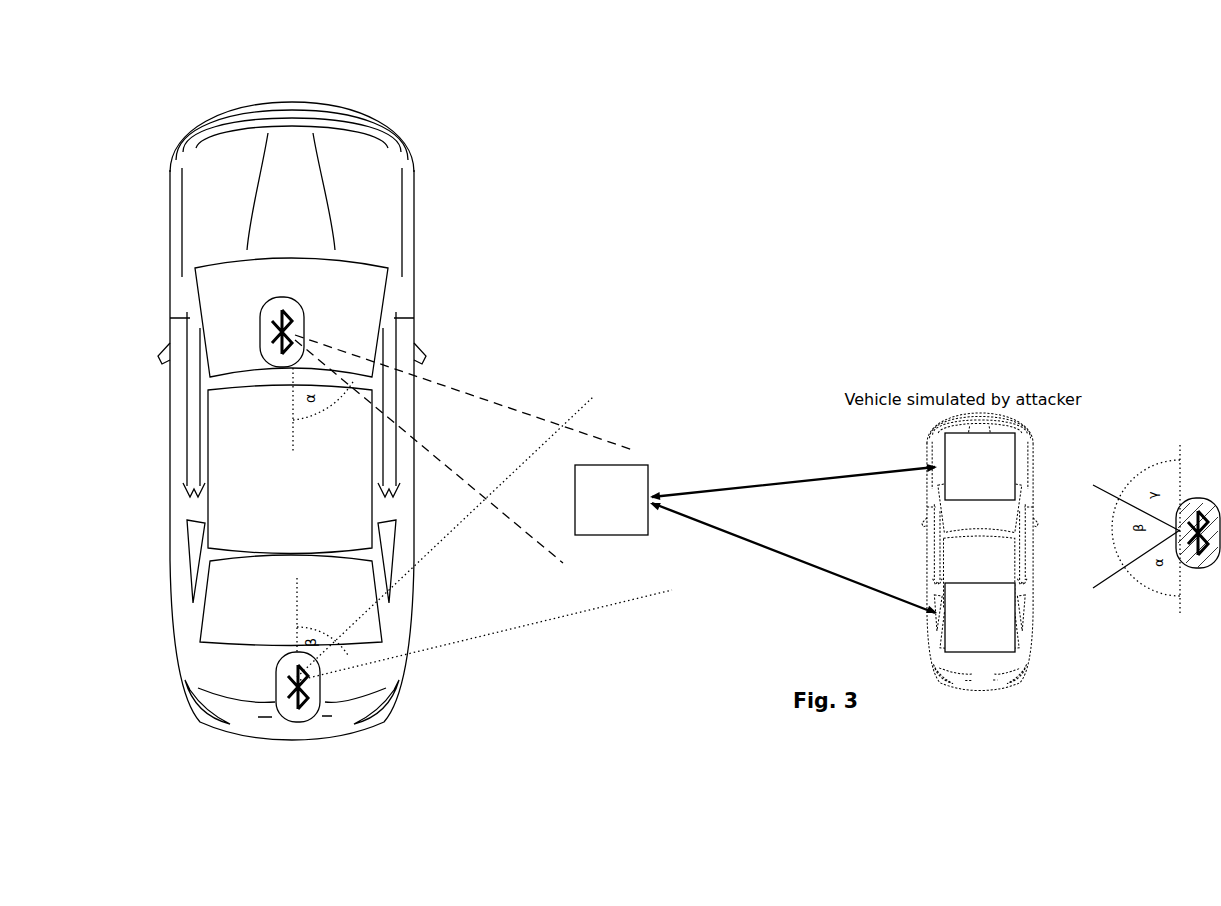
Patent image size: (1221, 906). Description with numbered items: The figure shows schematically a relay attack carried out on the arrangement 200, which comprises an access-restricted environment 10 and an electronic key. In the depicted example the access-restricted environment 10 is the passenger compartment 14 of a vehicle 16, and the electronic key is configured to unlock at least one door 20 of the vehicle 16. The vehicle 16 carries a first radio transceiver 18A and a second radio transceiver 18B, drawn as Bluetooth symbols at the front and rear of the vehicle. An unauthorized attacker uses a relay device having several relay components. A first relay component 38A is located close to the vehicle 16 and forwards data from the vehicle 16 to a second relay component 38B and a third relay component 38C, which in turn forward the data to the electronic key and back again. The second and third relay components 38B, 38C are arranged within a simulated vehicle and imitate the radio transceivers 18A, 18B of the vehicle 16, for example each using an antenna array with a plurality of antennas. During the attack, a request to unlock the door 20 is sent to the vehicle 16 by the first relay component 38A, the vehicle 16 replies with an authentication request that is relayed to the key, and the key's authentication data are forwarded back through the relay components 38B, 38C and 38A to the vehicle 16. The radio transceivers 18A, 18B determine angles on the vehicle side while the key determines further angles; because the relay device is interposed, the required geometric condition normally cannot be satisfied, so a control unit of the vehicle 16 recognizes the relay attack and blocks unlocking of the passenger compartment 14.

The arrangement 200 is at (157, 102).
The access-restricted environment 10 is at (438, 270).
The vehicle 16 is at (350, 112).
The passenger compartment 14 is at (320, 673).
The first radio transceiver 18A is at (260, 333).
The second radio transceiver 18B is at (275, 693).
The door 20 is at (408, 375).
The first relay component 38A is at (637, 463).
The second relay component 38B is at (1015, 472).
The third relay component 38C is at (995, 654).